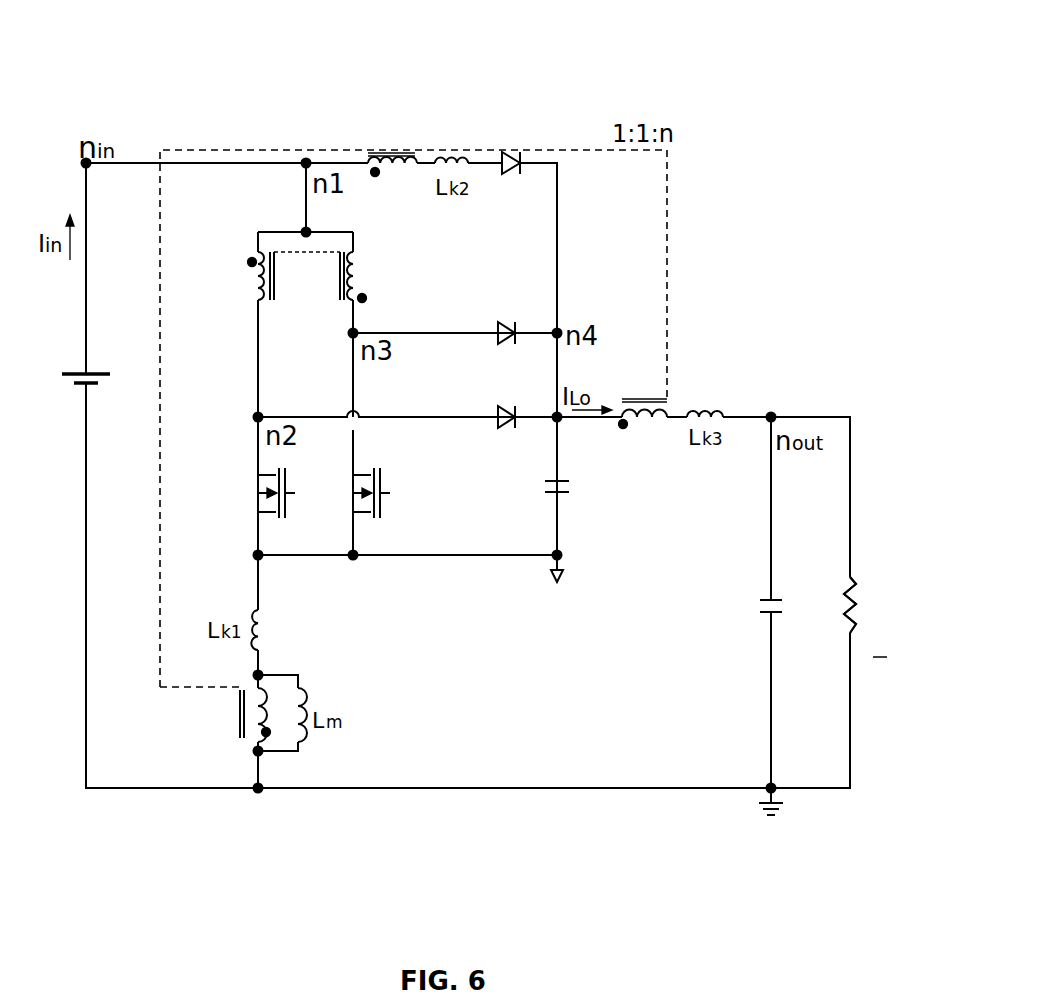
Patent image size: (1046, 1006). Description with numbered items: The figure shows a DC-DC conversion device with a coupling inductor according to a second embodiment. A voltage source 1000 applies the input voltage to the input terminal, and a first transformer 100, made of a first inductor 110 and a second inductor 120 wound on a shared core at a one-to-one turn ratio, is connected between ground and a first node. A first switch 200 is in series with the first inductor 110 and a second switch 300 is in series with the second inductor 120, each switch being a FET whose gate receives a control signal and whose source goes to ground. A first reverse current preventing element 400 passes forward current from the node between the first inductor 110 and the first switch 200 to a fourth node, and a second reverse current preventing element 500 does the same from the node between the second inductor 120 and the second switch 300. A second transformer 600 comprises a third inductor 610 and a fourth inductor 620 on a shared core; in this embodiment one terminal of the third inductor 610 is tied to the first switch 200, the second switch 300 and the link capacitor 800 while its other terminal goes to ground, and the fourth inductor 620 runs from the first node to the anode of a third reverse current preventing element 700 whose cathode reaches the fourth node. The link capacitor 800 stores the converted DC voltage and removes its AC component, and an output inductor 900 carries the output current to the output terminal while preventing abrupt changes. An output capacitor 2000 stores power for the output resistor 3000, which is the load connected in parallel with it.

The first transformer 100 is at (363, 251).
The first inductor 110 is at (257, 290).
The second inductor 120 is at (355, 295).
The first switch 200 is at (256, 494).
The second switch 300 is at (353, 504).
The first reverse current preventing element 400 is at (497, 410).
The second reverse current preventing element 500 is at (506, 320).
The second transformer 600 is at (343, 108).
The third inductor 610 is at (253, 738).
The fourth inductor 620 is at (418, 150).
The third reverse current preventing element 700 is at (525, 150).
The link capacitor 800 is at (572, 478).
The output inductor 900 is at (675, 400).
The voltage source 1000 is at (70, 372).
The output capacitor 2000 is at (765, 598).
The output resistor 3000 is at (850, 577).